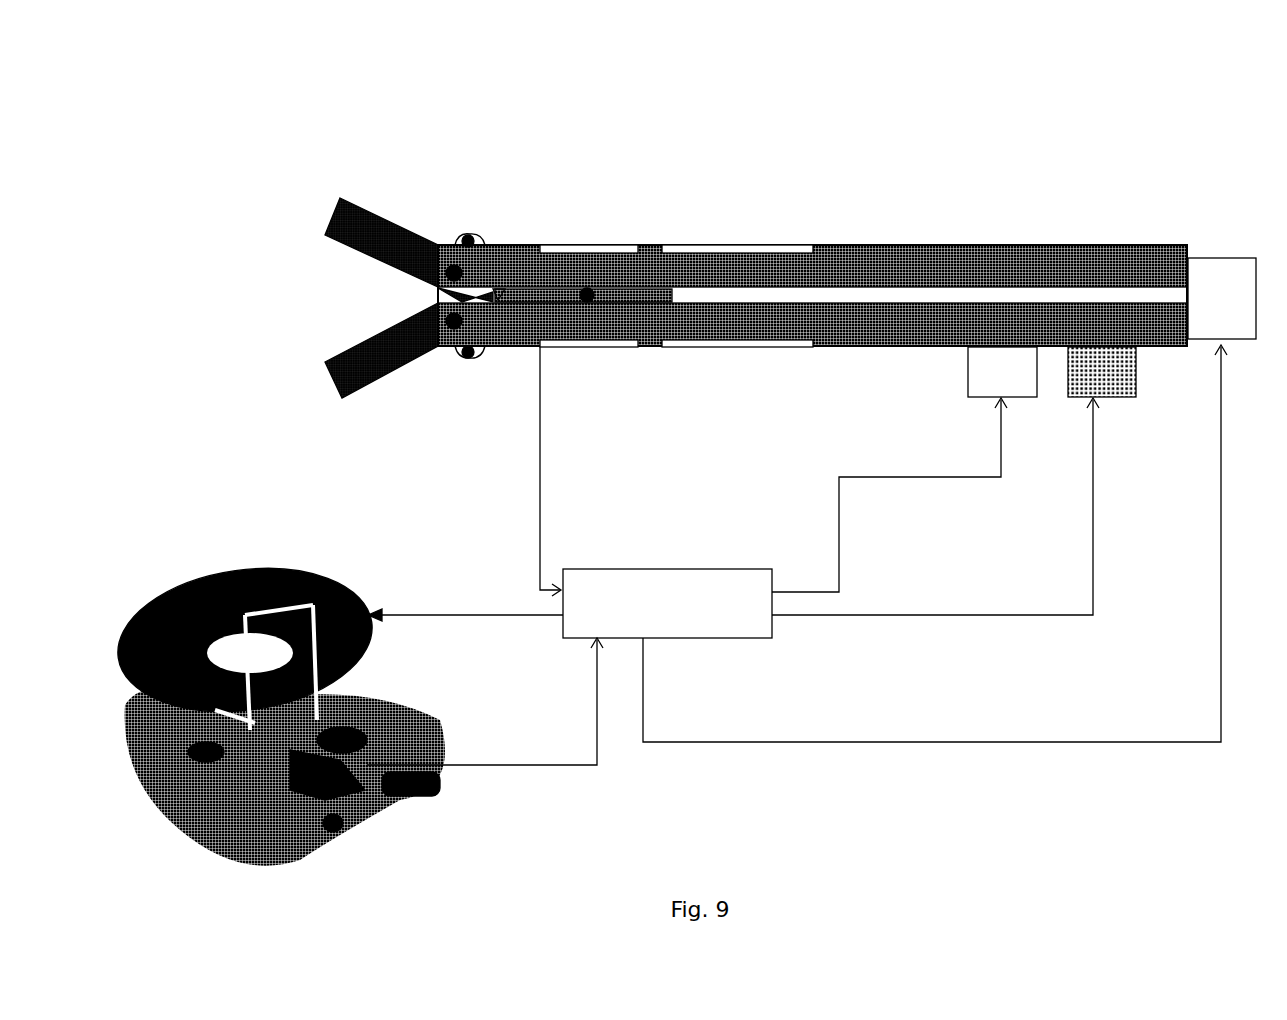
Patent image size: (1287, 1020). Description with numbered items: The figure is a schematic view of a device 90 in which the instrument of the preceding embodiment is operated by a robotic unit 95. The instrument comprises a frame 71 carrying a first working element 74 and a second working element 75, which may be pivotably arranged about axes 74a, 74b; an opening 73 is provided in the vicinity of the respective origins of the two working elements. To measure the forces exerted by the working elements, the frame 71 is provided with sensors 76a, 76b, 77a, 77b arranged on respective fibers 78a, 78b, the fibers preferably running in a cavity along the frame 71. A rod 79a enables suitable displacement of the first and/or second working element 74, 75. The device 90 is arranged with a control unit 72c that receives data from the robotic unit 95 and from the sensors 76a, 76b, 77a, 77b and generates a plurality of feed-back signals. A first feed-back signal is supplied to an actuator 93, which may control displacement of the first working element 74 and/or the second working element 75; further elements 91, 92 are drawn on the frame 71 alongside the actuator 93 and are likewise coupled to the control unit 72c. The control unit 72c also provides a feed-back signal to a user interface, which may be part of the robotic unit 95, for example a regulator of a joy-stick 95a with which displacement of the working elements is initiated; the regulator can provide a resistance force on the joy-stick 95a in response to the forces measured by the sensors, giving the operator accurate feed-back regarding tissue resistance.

The device 90 is at (582, 90).
The frame 71 is at (1040, 247).
The opening 73 is at (517, 290).
The first working element 74 is at (338, 221).
The second working element 75 is at (338, 383).
The axis 74a is at (452, 270).
The axis 74b is at (453, 330).
The sensor 76a is at (556, 245).
The sensor 76b is at (663, 245).
The sensor 77a is at (553, 348).
The sensor 77b is at (663, 348).
The fiber 78a is at (808, 246).
The fiber 78b is at (812, 348).
The rod 79a is at (840, 288).
The actuator 91 is at (968, 397).
The actuator 92 is at (1117, 397).
The actuator 93 is at (1222, 257).
The control unit 72c is at (622, 567).
The robotic unit 95 is at (173, 578).
The joy-stick 95a is at (345, 820).